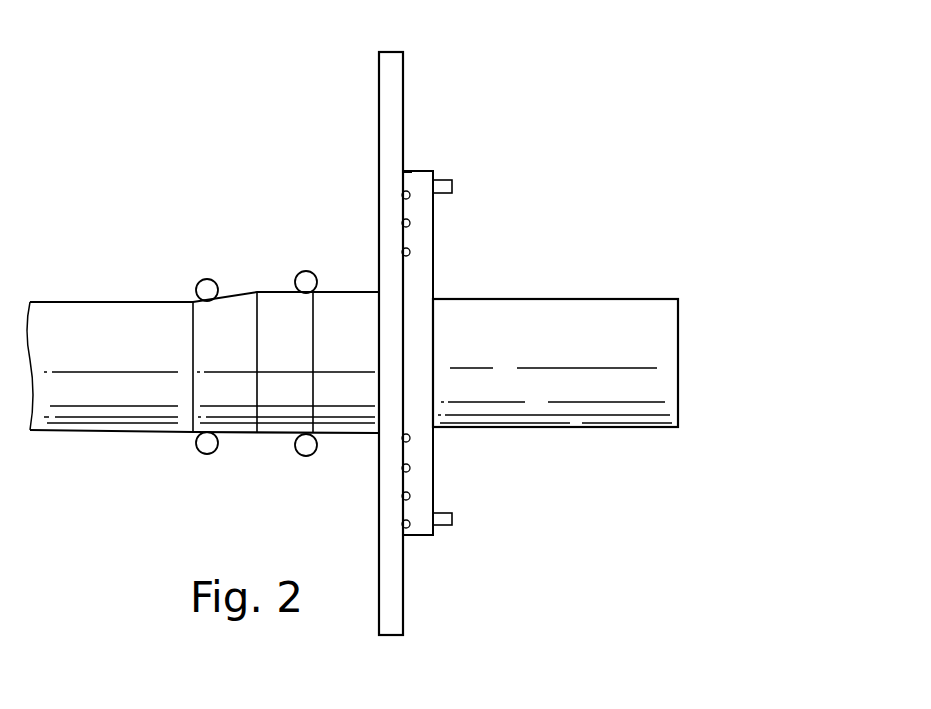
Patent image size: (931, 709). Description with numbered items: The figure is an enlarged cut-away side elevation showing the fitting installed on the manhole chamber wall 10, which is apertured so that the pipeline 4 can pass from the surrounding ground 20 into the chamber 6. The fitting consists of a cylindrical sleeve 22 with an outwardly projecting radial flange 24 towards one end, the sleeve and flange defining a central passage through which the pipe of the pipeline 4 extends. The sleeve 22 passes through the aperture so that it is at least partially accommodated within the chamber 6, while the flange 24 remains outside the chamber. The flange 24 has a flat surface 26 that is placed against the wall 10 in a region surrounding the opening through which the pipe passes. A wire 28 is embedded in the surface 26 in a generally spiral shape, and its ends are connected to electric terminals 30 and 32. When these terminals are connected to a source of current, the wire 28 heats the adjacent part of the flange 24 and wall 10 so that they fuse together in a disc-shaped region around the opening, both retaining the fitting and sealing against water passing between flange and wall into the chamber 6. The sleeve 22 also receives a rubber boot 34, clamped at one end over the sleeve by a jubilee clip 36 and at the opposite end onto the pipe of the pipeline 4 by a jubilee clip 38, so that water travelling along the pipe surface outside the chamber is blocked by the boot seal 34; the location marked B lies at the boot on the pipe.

The pipeline 4 is at (110, 432).
The chamber 6 is at (175, 168).
The wall 10 is at (404, 88).
The surrounding ground 20 is at (600, 168).
The sleeve 22 is at (353, 290).
The flange 24 is at (433, 171).
The surface 26 is at (410, 172).
The wire 28 is at (410, 222).
The electric terminal 30 is at (452, 186).
The electric terminal 32 is at (452, 518).
The rubber boot 34 is at (240, 437).
The jubilee clip 36 is at (297, 272).
The jubilee clip 38 is at (212, 279).
The weld seam B is at (345, 436).